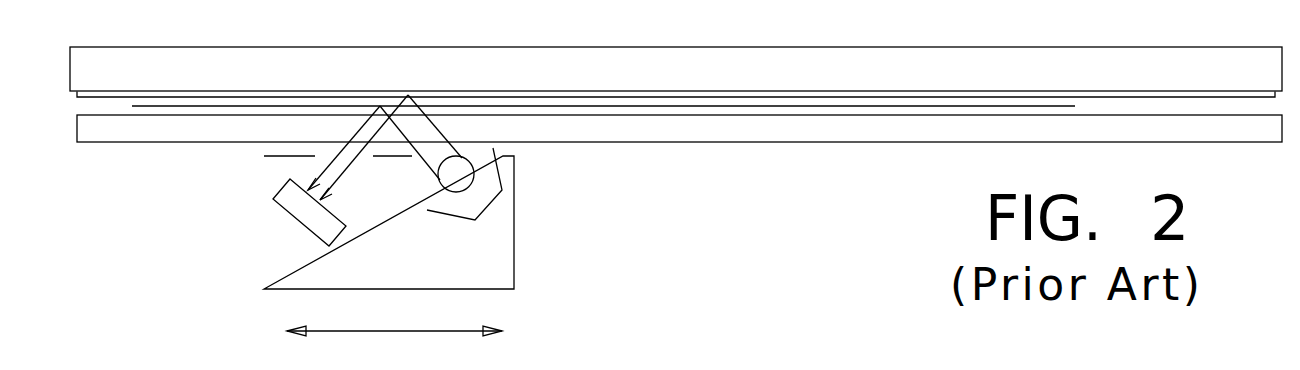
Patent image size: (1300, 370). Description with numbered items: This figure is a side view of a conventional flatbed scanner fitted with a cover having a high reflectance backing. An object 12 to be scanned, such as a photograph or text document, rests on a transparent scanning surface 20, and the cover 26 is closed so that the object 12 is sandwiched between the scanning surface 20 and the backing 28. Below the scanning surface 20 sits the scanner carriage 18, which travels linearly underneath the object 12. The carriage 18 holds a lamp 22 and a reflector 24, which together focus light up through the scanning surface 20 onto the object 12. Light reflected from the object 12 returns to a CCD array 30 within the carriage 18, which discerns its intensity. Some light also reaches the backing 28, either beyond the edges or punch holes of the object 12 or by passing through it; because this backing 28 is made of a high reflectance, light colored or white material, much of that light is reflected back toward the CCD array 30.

The object 12 is at (742, 107).
The scanner carriage 18 is at (265, 254).
The transparent scanning surface 20 is at (124, 134).
The lamp 22 is at (440, 185).
The reflector 24 is at (487, 212).
The cover 26 is at (150, 53).
The backing 28 is at (78, 96).
The CCD array 30 is at (337, 231).